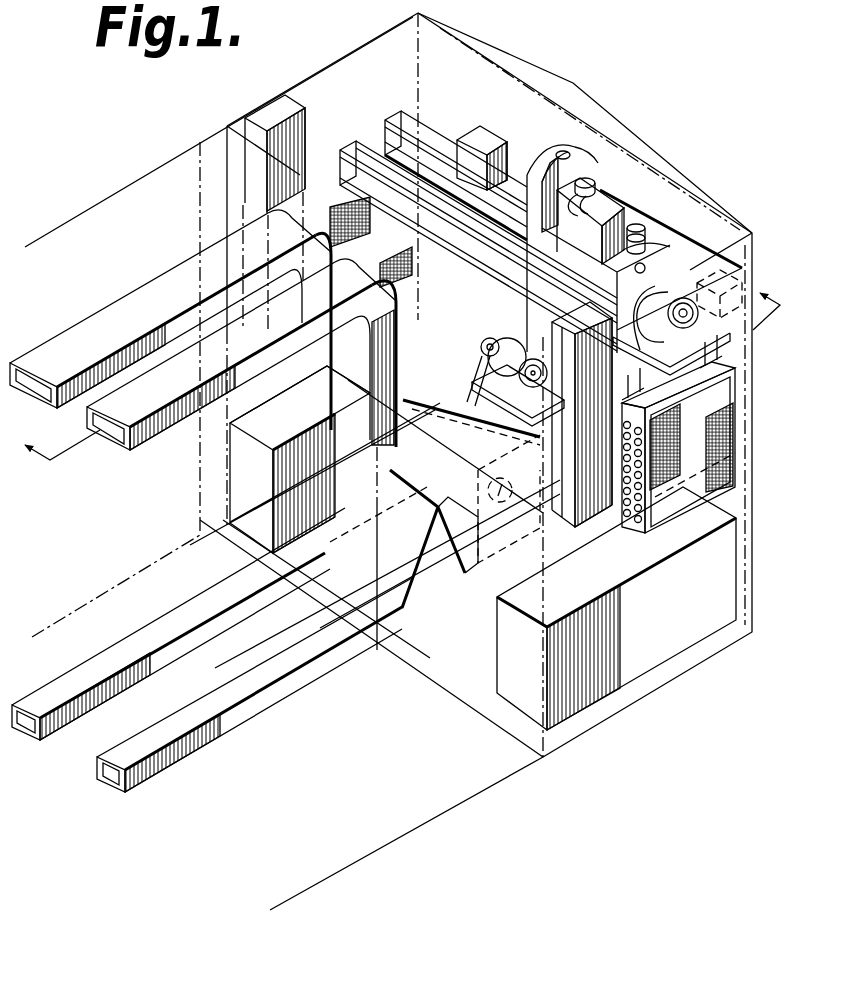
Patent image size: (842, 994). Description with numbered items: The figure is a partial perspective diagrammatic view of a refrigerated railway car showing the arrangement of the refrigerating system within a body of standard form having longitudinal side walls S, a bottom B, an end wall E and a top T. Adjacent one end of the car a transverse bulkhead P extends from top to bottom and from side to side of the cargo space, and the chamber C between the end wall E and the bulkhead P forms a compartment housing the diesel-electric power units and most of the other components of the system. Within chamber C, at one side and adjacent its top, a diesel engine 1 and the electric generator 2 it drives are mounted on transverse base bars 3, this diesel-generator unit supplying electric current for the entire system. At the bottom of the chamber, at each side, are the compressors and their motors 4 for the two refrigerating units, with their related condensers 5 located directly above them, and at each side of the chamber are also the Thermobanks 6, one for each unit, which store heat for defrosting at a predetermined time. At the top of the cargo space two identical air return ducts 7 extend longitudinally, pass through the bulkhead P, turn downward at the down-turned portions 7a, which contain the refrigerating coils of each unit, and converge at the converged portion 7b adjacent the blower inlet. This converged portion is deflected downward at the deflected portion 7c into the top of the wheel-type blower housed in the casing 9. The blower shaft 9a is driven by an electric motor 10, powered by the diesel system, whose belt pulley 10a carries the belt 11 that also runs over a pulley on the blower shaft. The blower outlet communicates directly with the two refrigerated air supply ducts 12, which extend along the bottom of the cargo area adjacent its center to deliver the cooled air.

The diesel engine 1 is at (612, 193).
The electric generator 2 is at (686, 317).
The transverse base bars 3 is at (683, 378).
The compressors and their motors 4 is at (245, 478).
The condensers 5 is at (338, 205).
The Thermobanks 6 is at (270, 118).
The air return ducts 7 is at (126, 312).
The down-turned portions 7a is at (351, 345).
The converged portion 7b is at (310, 398).
The deflected portion 7c is at (457, 417).
The blower casing 9 is at (500, 550).
The blower shaft 9a is at (522, 536).
The electric motor 10 is at (511, 352).
The belt pulley 10a is at (484, 345).
The belt 11 is at (453, 361).
The refrigerated air supply ducts 12 is at (150, 633).
The top T is at (480, 85).
The longitudinal side walls S is at (117, 193).
The chamber C is at (360, 70).
The transverse bulkhead P is at (220, 150).
The end wall E is at (753, 270).
The bottom B is at (398, 802).